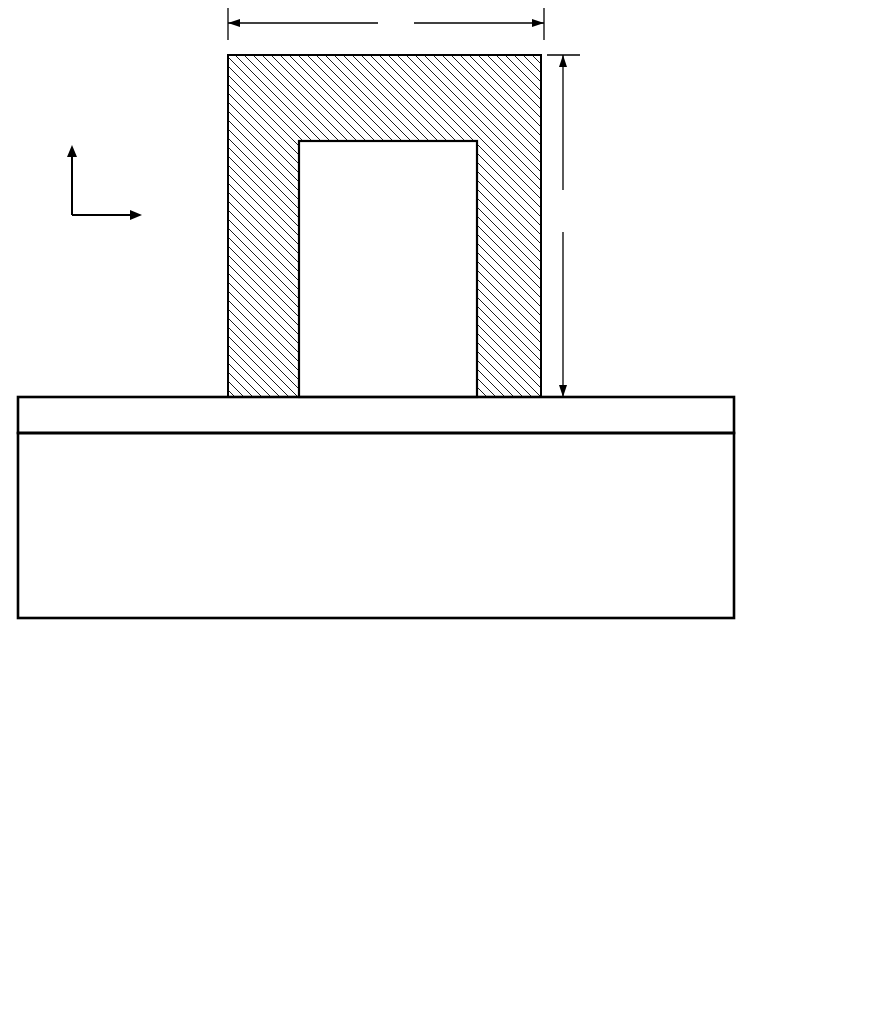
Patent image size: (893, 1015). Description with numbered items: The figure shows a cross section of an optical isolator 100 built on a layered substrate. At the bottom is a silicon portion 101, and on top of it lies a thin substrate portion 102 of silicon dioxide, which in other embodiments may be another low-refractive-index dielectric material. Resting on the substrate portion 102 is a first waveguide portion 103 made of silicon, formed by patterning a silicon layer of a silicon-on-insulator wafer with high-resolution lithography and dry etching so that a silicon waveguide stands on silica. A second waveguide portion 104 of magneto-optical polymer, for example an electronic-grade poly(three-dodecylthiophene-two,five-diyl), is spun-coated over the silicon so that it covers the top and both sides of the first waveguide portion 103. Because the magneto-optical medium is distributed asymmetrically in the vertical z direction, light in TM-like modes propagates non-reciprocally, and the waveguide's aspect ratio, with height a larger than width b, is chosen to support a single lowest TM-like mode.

The optical isolator 100 is at (376, 498).
The silicon portion 101 is at (176, 501).
The substrate portion 102 is at (176, 423).
The first waveguide portion 103 is at (369, 279).
The second waveguide portion 104 is at (250, 126).